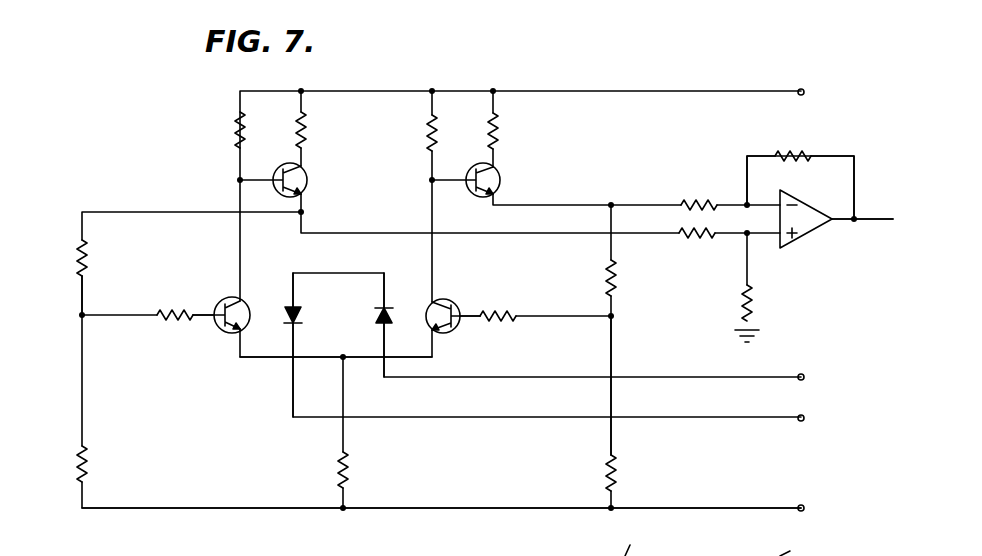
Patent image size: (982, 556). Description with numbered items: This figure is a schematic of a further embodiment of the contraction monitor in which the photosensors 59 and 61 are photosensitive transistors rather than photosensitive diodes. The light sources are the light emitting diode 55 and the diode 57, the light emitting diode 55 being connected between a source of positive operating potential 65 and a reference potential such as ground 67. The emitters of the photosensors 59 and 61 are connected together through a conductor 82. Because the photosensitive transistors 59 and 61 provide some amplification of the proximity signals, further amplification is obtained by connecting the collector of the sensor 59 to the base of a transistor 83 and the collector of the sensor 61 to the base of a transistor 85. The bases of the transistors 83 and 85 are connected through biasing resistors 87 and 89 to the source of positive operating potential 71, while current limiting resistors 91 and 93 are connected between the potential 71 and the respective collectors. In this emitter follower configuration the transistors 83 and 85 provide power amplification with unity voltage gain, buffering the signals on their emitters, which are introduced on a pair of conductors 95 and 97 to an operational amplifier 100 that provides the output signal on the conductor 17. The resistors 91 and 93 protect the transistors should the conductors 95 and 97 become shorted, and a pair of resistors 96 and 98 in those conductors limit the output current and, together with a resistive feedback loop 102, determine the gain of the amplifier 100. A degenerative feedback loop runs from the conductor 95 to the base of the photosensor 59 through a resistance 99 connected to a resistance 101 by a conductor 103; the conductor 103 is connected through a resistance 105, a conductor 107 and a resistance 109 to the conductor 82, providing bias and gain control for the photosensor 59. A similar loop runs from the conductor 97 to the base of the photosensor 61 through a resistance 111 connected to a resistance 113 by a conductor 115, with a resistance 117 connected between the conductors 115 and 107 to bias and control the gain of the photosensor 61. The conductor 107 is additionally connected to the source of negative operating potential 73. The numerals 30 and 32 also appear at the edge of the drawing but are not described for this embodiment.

The conductor 17 is at (877, 219).
The cable 30 is at (786, 555).
The cable 32 is at (643, 545).
The light emitting diode 55 is at (303, 313).
The diode 57 is at (376, 318).
The photosensor 59 is at (246, 300).
The photosensor 61 is at (428, 300).
The source of positive operating potential 65 is at (748, 377).
The ground 67 is at (762, 420).
The source of positive operating potential 71 is at (818, 73).
The source of negative operating potential 73 is at (816, 494).
The conductor 82 is at (272, 358).
The transistor 83 is at (282, 172).
The transistor 85 is at (472, 192).
The biasing resistor 87 is at (234, 128).
The biasing resistor 89 is at (426, 142).
The current limiting resistor 91 is at (306, 132).
The current limiting resistor 93 is at (500, 131).
The conductor 95 is at (762, 240).
The resistor 96 is at (703, 240).
The conductor 97 is at (758, 205).
The resistor 98 is at (708, 198).
The resistance 99 is at (87, 252).
The operational amplifier 100 is at (806, 241).
The resistance 101 is at (186, 306).
The resistive feedback loop 102 is at (822, 146).
The conductor 103 is at (82, 296).
The resistance 105 is at (86, 452).
The conductor 107 is at (283, 512).
The resistance 109 is at (350, 462).
The resistance 111 is at (618, 284).
The resistance 113 is at (504, 312).
The conductor 115 is at (614, 354).
The resistance 117 is at (614, 462).